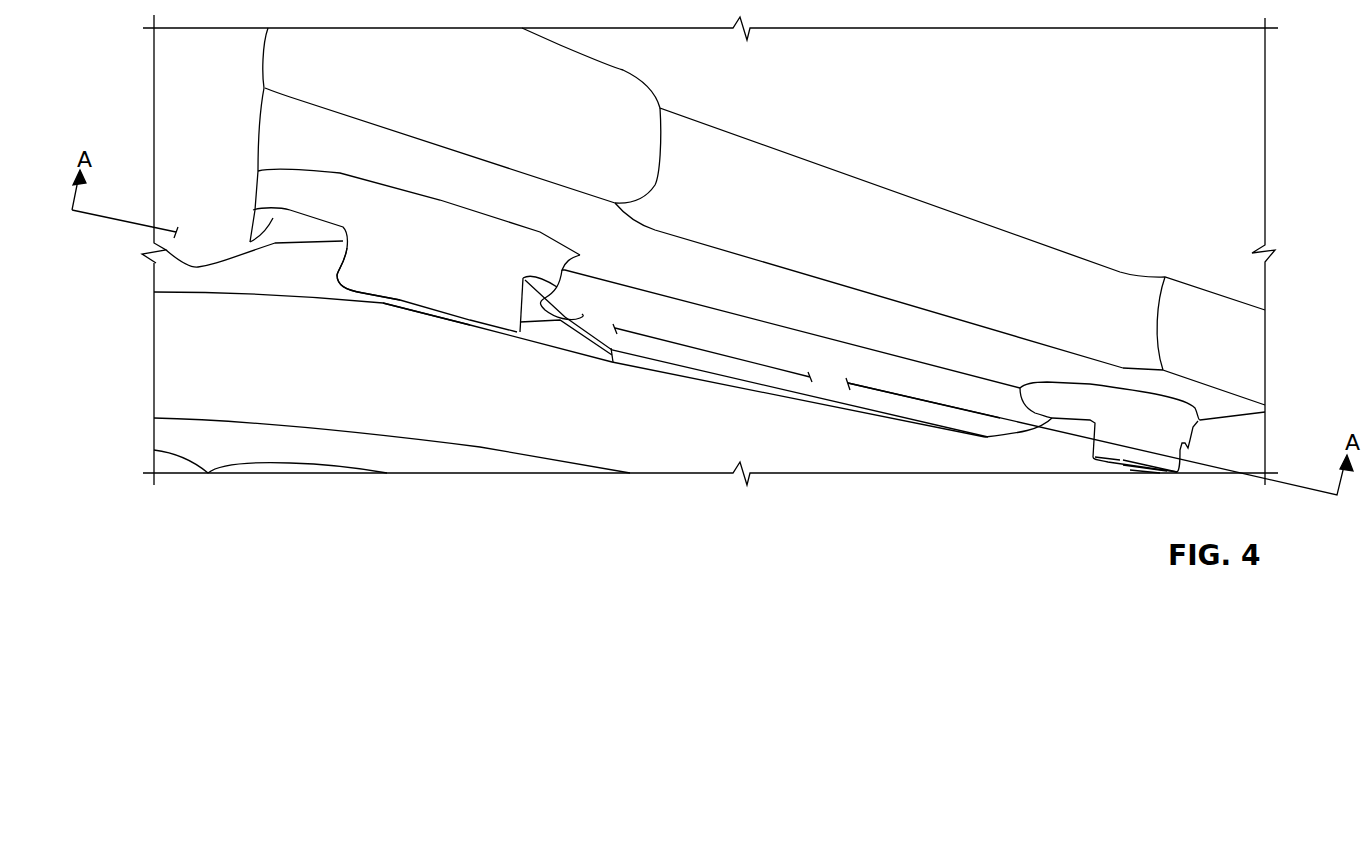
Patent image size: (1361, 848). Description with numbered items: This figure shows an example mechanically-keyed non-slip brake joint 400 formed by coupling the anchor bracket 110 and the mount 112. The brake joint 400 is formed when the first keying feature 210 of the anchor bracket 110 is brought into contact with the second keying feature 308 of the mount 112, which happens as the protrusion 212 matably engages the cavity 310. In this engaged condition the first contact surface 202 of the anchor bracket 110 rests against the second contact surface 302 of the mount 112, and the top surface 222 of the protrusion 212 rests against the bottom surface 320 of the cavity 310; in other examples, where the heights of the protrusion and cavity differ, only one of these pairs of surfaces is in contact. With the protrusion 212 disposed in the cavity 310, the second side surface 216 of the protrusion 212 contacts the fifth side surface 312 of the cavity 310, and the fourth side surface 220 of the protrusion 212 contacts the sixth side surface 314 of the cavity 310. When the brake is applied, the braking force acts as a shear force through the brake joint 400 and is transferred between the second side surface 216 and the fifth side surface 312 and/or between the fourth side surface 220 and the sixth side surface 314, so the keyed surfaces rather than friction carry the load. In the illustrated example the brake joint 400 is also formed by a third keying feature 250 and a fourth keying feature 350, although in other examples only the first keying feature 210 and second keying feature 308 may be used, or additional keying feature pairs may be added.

The mechanically-keyed non-slip brake joint 400 is at (1136, 84).
The anchor bracket 110 is at (922, 205).
The mount 112 is at (814, 397).
The first contact surface 202 is at (268, 242).
The second contact surface 302 is at (329, 243).
The second side surface 216 is at (401, 251).
The fifth side surface 312 is at (345, 266).
The top surface 222 is at (365, 292).
The protrusion 212 is at (490, 272).
The fourth side surface 220 is at (687, 339).
The sixth side surface 314 is at (687, 339).
The bottom surface 320 is at (390, 303).
The cavity 310 is at (440, 322).
The first keying feature 210 is at (730, 356).
The second keying feature 308 is at (480, 305).
The third keying feature 250 is at (1125, 465).
The fourth keying feature 350 is at (1116, 460).